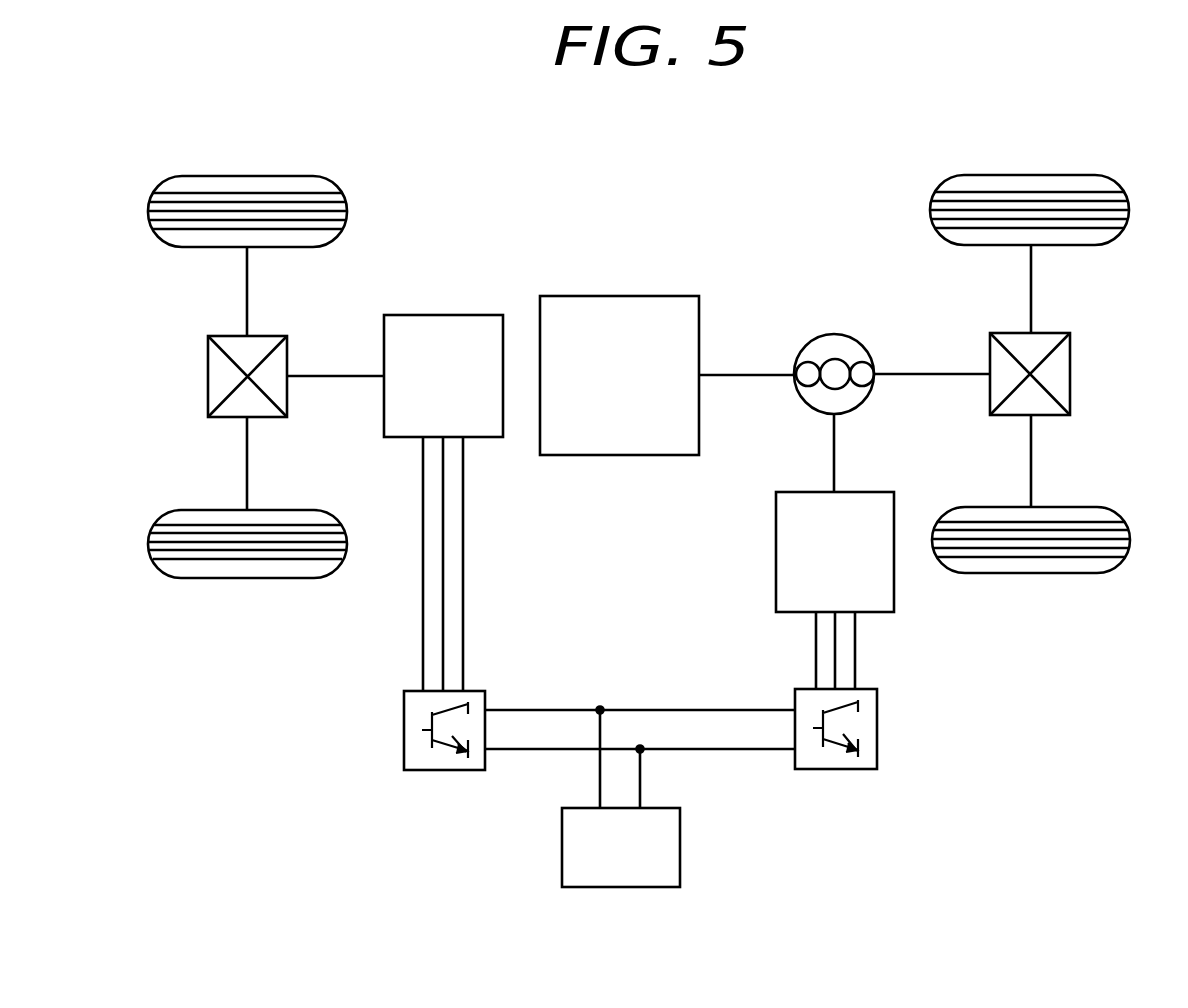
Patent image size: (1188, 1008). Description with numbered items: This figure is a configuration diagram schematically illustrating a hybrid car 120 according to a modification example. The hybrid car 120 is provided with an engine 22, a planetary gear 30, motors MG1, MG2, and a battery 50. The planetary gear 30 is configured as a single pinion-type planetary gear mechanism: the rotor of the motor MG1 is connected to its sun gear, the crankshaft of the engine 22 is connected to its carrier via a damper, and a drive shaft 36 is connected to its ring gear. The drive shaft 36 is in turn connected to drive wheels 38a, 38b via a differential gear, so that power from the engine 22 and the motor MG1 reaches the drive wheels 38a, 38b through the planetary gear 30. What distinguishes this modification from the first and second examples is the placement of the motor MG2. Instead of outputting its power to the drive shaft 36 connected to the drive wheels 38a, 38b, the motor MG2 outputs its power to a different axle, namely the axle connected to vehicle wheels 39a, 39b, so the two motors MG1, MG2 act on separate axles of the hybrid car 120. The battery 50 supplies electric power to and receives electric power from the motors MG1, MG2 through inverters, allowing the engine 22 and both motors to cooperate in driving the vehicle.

The hybrid car 120 is at (845, 150).
The engine 22 is at (620, 296).
The planetary gear 30 is at (836, 334).
The drive shaft 36 is at (913, 372).
The drive wheel 38a is at (1030, 175).
The drive wheel 38b is at (1030, 573).
The vehicle wheel 39a is at (247, 176).
The vehicle wheel 39b is at (248, 578).
The battery 50 is at (680, 848).
The motor MG1 is at (776, 549).
The motor MG2 is at (443, 315).